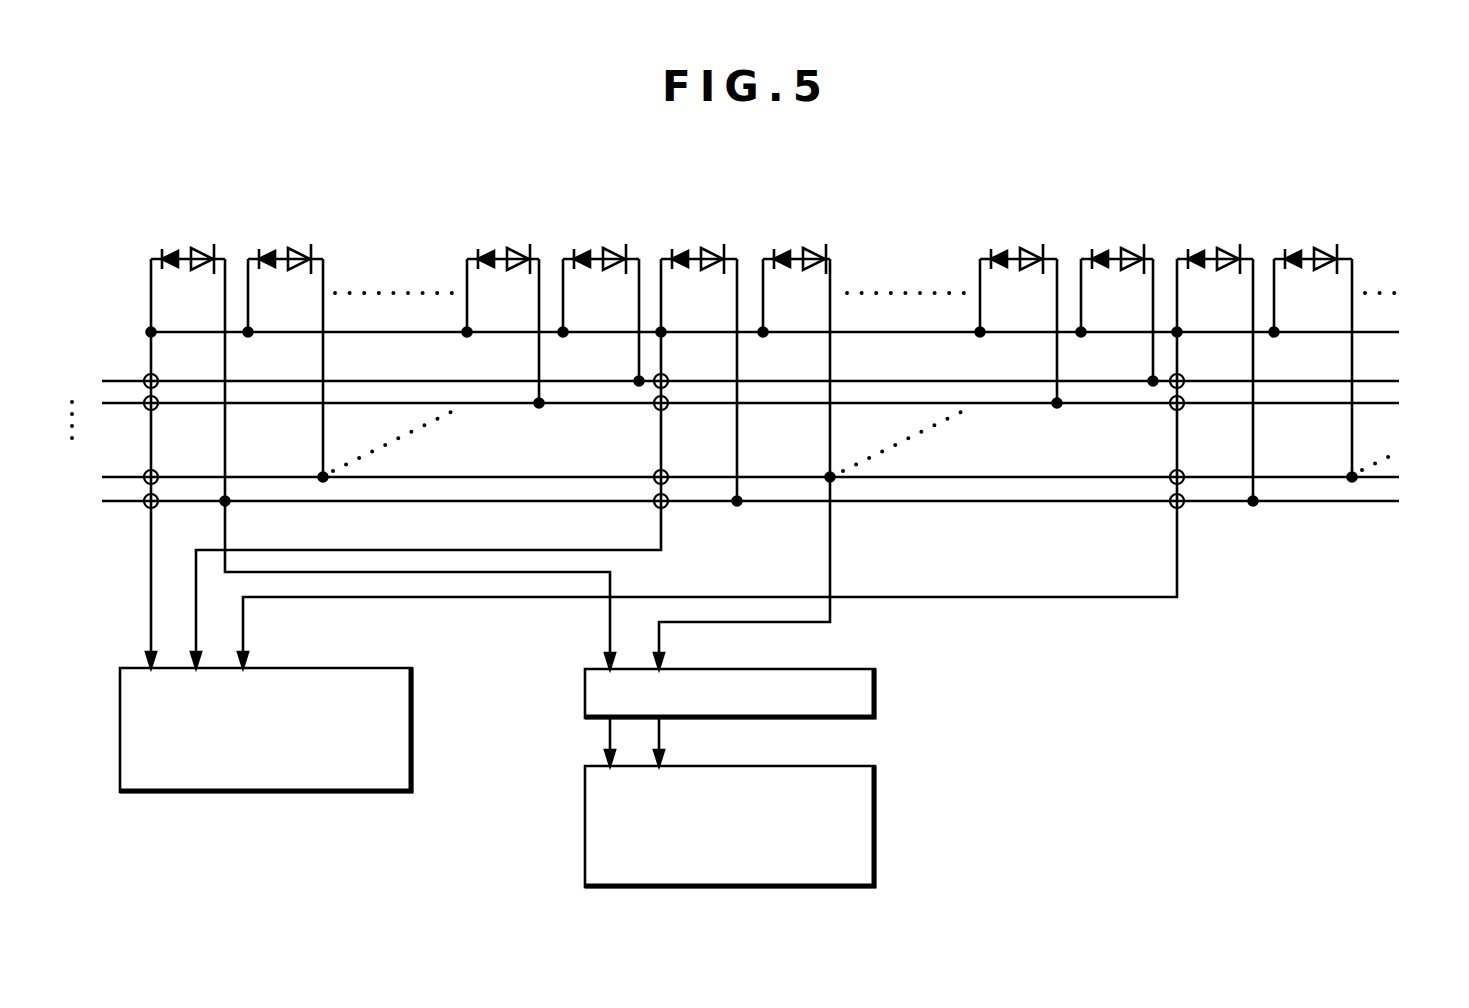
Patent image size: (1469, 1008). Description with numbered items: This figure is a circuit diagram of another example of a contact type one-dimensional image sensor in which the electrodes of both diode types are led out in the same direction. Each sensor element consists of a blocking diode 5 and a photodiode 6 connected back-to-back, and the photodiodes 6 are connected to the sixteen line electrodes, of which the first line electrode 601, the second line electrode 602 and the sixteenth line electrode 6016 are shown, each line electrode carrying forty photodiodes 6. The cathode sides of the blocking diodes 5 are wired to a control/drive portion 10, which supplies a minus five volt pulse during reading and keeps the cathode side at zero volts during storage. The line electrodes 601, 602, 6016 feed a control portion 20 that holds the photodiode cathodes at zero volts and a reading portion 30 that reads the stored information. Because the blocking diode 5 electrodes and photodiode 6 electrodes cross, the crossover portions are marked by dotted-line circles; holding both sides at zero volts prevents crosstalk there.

The blocking diode 5 is at (170, 251).
The photodiode 6 is at (296, 251).
The control/drive portion 10 is at (280, 715).
The control portion 20 is at (744, 678).
The reading portion 30 is at (744, 811).
The line electrode 6016 is at (721, 381).
The line electrode 602 is at (721, 474).
The line electrode 601 is at (721, 505).